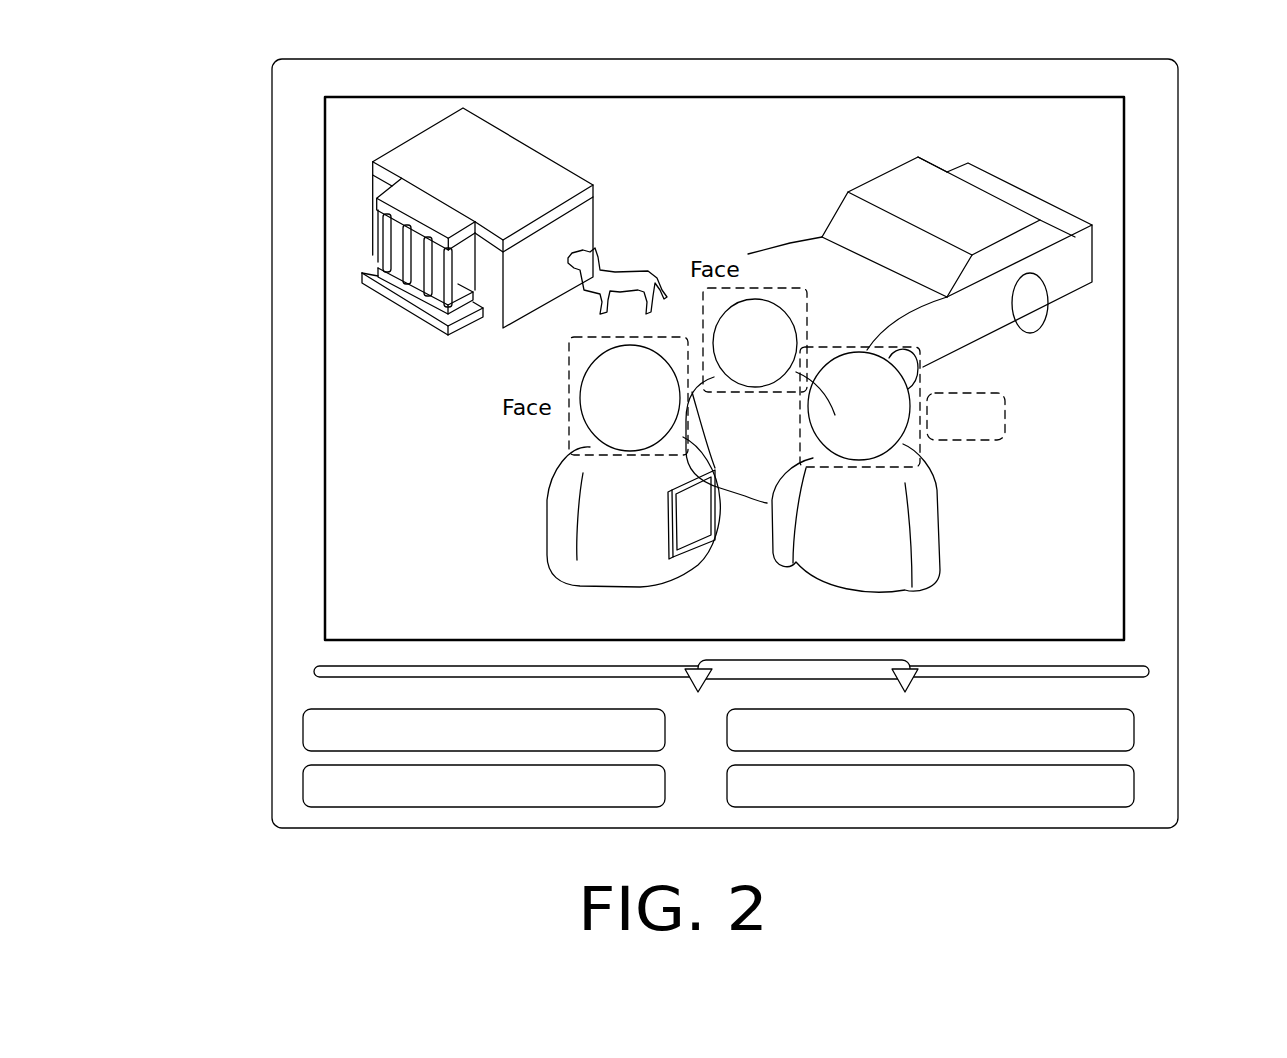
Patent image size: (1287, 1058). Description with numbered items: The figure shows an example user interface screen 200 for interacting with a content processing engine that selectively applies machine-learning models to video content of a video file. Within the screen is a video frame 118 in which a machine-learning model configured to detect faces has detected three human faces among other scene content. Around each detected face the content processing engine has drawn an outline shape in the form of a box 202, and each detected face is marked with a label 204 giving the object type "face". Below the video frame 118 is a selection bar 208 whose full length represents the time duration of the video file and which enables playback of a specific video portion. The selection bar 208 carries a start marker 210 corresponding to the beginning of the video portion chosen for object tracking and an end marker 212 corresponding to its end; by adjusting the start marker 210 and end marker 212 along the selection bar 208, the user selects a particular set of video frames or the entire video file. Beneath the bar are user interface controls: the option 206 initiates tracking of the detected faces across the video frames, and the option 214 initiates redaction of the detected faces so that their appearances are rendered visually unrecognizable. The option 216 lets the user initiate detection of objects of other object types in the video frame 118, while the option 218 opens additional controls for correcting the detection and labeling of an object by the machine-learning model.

The user interface screen 200 is at (843, 59).
The video frame 118 is at (1033, 99).
The box 202 is at (918, 440).
The label 204 is at (982, 440).
The option 206 is at (1133, 733).
The selection bar 208 is at (1118, 666).
The start marker 210 is at (696, 668).
The end marker 212 is at (915, 667).
The option 214 is at (1133, 790).
The option 216 is at (303, 728).
The option 218 is at (303, 787).